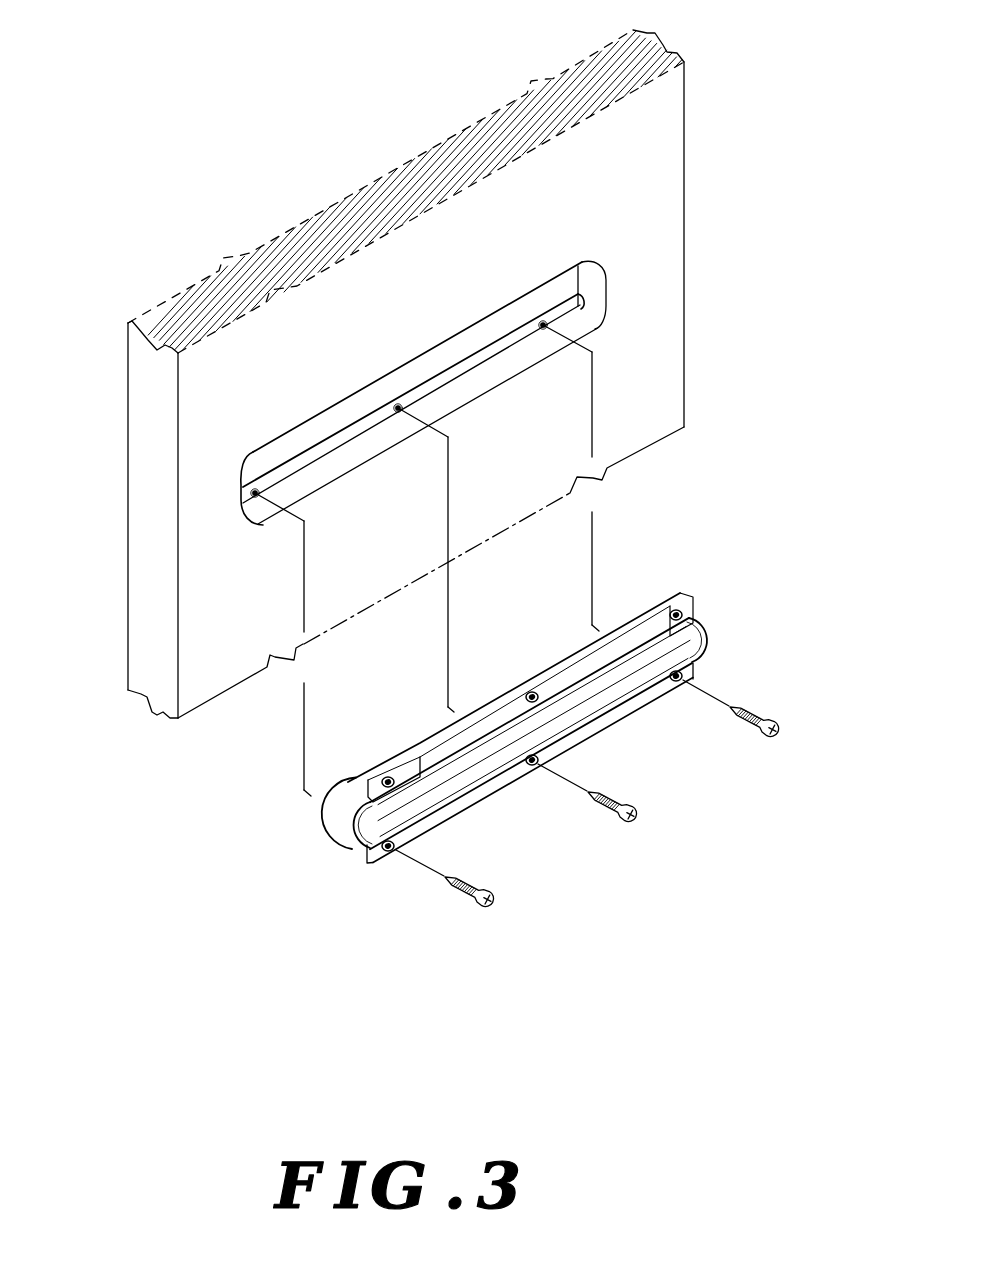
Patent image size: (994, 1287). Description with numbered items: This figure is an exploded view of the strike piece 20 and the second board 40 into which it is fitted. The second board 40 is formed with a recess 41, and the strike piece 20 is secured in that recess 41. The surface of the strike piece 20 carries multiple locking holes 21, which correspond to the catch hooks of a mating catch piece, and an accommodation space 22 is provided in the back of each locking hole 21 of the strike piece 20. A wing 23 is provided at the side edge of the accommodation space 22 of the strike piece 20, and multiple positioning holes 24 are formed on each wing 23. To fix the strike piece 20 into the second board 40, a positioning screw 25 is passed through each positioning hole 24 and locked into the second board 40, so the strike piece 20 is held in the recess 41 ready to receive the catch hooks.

The strike piece 20 is at (506, 807).
The locking hole 21 is at (650, 648).
The accommodation space 22 is at (577, 712).
The wing 23 is at (453, 808).
The positioning hole 24 is at (391, 855).
The positioning screw 25 is at (466, 898).
The second board 40 is at (130, 312).
The recess 41 is at (578, 310).